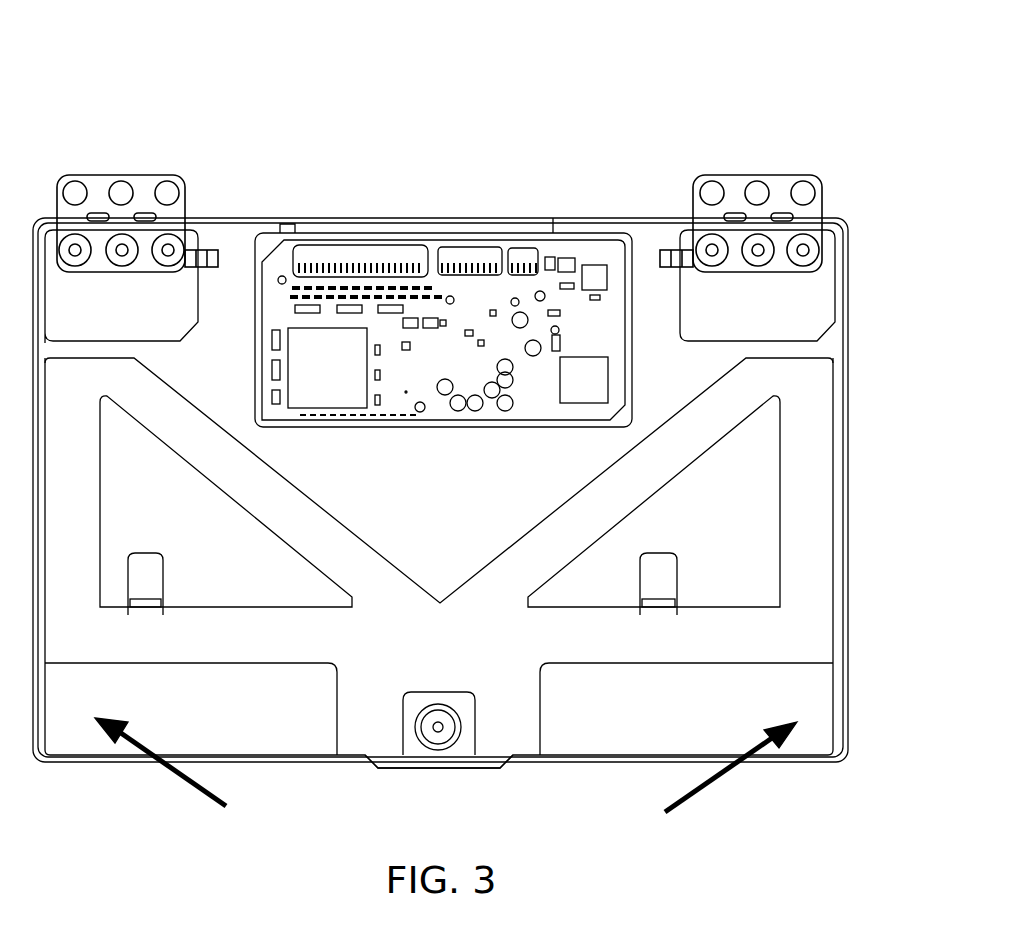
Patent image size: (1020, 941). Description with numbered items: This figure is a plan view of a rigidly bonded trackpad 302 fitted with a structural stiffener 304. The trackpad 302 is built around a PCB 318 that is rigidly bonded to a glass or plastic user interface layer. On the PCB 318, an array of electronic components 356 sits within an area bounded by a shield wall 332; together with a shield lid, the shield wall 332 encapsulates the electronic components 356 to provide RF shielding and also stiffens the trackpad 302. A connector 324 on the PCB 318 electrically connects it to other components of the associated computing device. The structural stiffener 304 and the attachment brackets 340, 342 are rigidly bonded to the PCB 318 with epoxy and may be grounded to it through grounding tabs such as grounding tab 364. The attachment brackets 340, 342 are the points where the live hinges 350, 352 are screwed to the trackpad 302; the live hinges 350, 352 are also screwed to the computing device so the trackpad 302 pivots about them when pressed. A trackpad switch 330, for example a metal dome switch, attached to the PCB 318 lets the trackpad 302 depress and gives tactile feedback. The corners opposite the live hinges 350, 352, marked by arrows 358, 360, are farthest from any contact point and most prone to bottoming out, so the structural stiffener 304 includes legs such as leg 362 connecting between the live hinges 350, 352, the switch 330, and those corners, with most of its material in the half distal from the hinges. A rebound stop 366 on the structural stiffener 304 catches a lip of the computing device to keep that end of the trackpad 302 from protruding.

The trackpad 302 is at (166, 76).
The structural stiffener 304 is at (425, 654).
The PCB 318 is at (422, 511).
The connector 324 is at (375, 245).
The trackpad switch 330 is at (425, 707).
The shield wall 332 is at (492, 425).
The attachment bracket 340 is at (97, 317).
The attachment bracket 342 is at (745, 317).
The live hinge 350 is at (150, 178).
The live hinge 352 is at (787, 178).
The electronic components 356 is at (394, 403).
The arrow 358 is at (192, 787).
The arrow 360 is at (704, 789).
The leg 362 is at (189, 646).
The grounding tab 364 is at (677, 582).
The rebound stop 366 is at (396, 768).